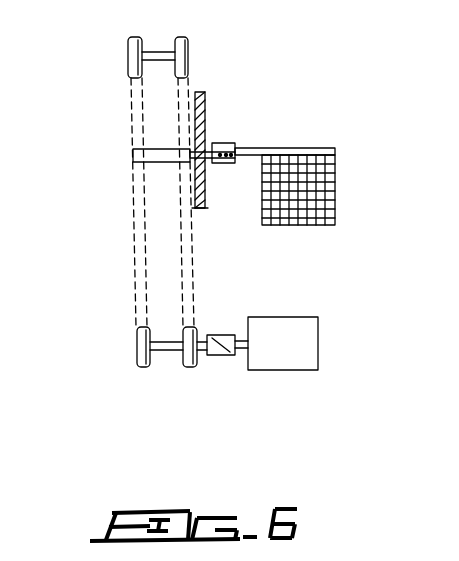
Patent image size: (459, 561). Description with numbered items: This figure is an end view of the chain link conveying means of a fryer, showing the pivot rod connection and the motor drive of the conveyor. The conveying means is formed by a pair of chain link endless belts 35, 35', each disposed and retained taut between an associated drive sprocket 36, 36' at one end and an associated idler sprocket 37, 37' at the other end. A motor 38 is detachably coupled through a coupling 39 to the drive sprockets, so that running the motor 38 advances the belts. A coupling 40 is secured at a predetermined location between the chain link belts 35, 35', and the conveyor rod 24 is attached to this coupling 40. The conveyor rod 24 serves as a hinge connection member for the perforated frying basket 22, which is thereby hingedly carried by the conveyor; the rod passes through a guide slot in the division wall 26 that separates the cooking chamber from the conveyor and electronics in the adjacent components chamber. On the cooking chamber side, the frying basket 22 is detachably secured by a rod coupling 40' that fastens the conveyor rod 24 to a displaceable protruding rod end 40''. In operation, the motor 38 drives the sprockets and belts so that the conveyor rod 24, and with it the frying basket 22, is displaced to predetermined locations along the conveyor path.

The perforated frying basket 22 is at (295, 206).
The conveyor rod 24 is at (267, 148).
The division wall 26 is at (212, 100).
The chain link endless belt 35 is at (116, 202).
The chain link endless belt 35' is at (215, 202).
The drive sprocket 36 is at (112, 347).
The drive sprocket 36' is at (221, 315).
The idler sprocket 37 is at (96, 55).
The idler sprocket 37' is at (205, 46).
The motor 38 is at (296, 366).
The coupling 39 is at (230, 320).
The coupling 40 is at (131, 142).
The rod coupling 40' is at (243, 122).
The protruding rod end 40'' is at (132, 171).